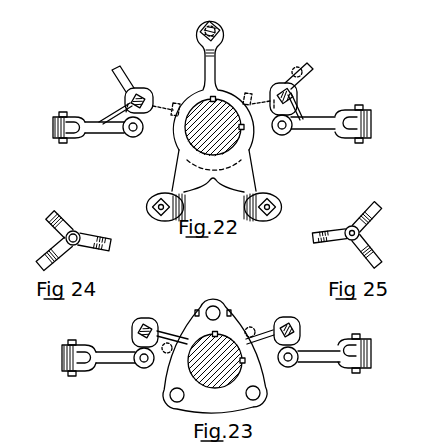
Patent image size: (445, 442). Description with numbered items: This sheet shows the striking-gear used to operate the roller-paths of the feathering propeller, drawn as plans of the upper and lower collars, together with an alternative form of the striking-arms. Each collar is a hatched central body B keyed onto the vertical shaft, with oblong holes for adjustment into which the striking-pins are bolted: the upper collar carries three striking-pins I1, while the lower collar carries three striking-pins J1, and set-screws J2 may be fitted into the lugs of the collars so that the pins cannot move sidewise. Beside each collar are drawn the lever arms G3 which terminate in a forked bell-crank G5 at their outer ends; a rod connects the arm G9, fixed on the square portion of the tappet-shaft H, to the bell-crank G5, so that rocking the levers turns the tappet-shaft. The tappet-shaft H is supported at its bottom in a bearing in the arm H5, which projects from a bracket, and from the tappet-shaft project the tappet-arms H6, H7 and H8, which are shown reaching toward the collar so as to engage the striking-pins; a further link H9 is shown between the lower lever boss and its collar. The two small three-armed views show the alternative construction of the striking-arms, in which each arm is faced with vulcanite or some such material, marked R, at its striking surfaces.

In FIG. 22, the hub body B is at (214, 106).
In FIG. 23, the hub body B is at (215, 356).
In FIG. 22, the striking-pins I1 is at (222, 27).
In FIG. 22, the bell-crank G5 is at (52, 127).
In FIG. 23, the bell-crank G5 is at (61, 358).
In FIG. 22, the lever arm G3 is at (210, 126).
In FIG. 23, the lever arm G3 is at (129, 362).
In FIG. 22, the tappet-shaft H is at (146, 94).
In FIG. 24, the tappet-shaft H is at (73, 238).
In FIG. 23, the tappet-shaft H is at (157, 329).
In FIG. 22, the arm H5 is at (124, 76).
In FIG. 22, the tappet-arm H6 is at (299, 76).
In FIG. 22, the tappet-arm H7 is at (118, 114).
In FIG. 22, the tappet-arm H8 is at (211, 104).
In FIG. 23, the connecting link H9 is at (215, 339).
In FIG. 23, the arm G9 is at (296, 345).
In FIG. 23, the striking-pins J1 is at (215, 354).
In FIG. 23, the set-screws J2 is at (220, 309).
In FIG. 24, the vulcanite facing R is at (73, 245).
In FIG. 25, the vulcanite facing R is at (347, 236).